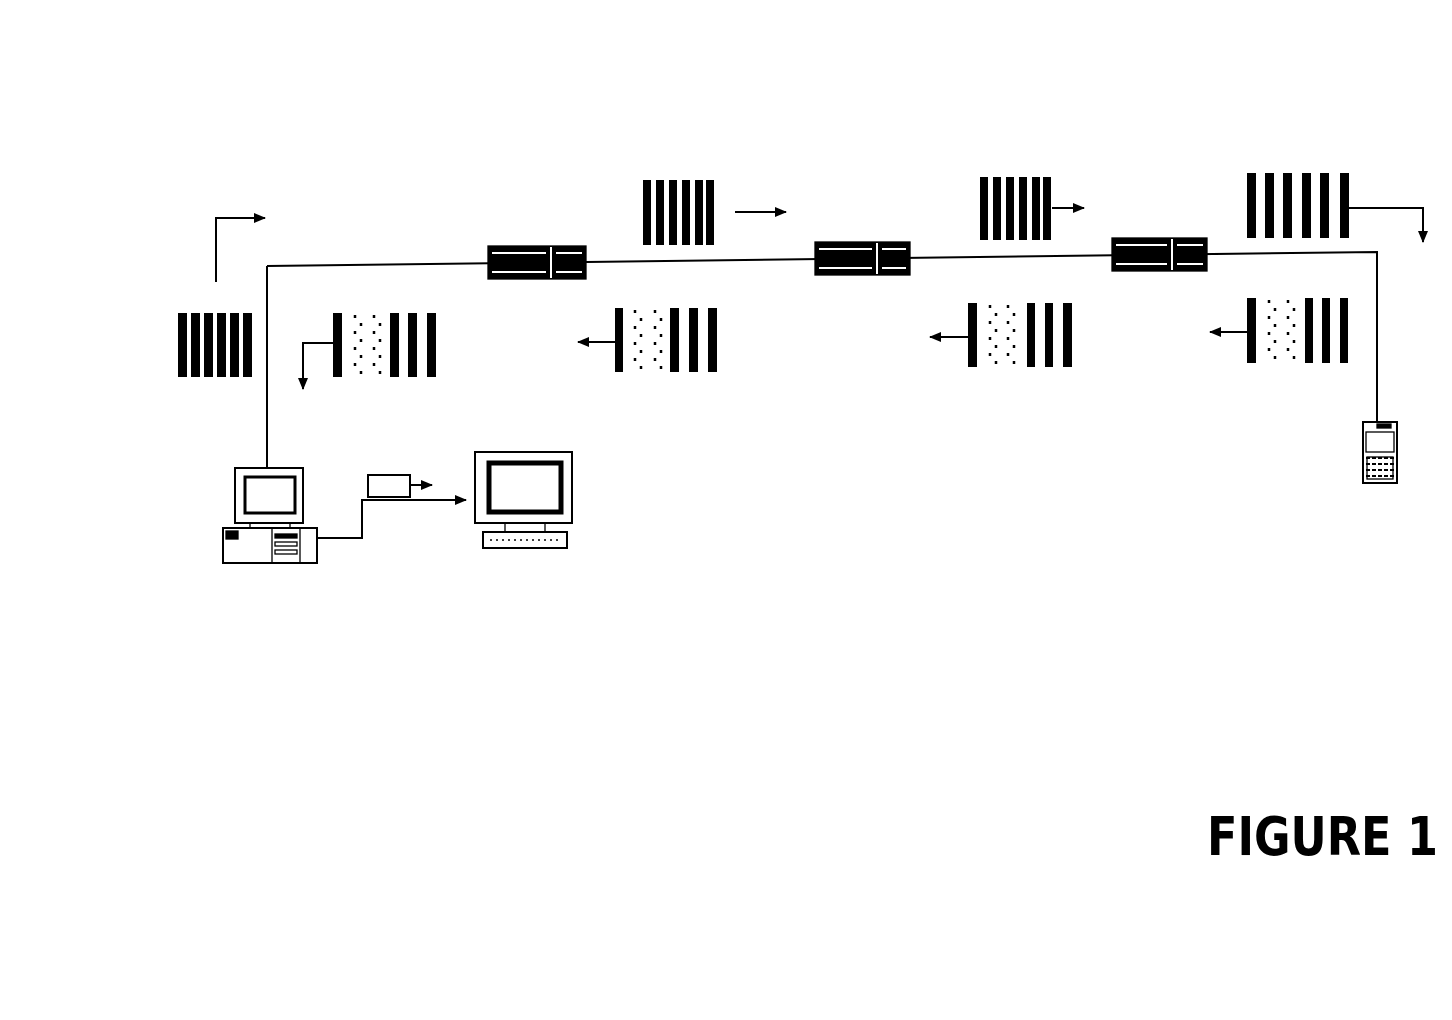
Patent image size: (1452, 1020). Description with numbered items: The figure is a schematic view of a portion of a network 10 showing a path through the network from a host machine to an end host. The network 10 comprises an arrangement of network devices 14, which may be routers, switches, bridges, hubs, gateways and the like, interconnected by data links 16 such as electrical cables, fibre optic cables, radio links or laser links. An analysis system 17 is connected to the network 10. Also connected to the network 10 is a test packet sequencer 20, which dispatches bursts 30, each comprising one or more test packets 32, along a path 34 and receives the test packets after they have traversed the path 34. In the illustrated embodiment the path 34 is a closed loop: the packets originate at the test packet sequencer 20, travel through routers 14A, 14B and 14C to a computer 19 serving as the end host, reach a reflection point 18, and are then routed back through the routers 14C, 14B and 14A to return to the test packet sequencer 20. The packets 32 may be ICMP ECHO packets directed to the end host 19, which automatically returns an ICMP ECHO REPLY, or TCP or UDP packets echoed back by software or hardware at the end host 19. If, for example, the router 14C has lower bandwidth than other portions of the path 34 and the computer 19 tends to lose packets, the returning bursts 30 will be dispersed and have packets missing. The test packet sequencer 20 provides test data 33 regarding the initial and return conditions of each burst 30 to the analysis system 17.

The network 10 is at (553, 136).
The network devices 14 is at (824, 264).
The router 14A is at (555, 279).
The router 14B is at (863, 276).
The router 14C is at (1158, 272).
The data links 16 is at (415, 262).
The analysis system 17 is at (492, 457).
The reflection point 18 is at (1377, 420).
The computer 19 is at (1363, 453).
The test packet sequencer 20 is at (243, 473).
The burst 30 is at (207, 288).
The test packets 32 is at (195, 378).
The test data 33 is at (388, 475).
The path 34 is at (530, 187).